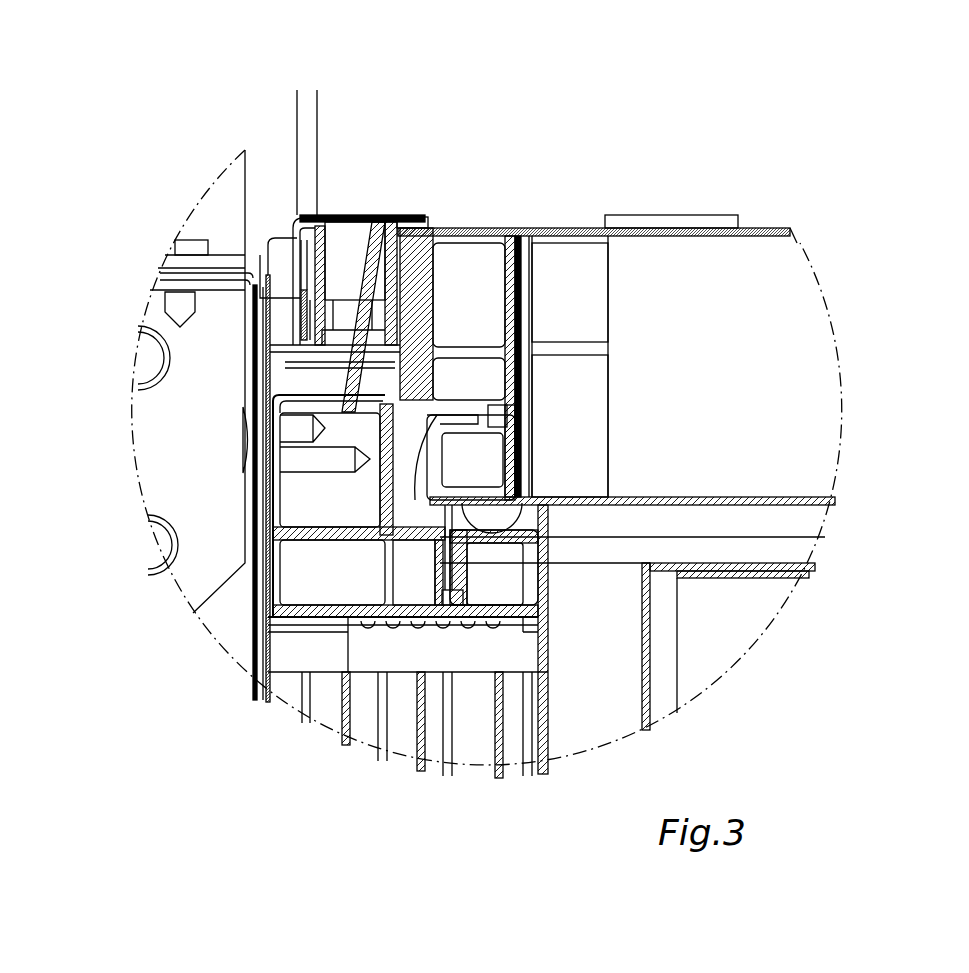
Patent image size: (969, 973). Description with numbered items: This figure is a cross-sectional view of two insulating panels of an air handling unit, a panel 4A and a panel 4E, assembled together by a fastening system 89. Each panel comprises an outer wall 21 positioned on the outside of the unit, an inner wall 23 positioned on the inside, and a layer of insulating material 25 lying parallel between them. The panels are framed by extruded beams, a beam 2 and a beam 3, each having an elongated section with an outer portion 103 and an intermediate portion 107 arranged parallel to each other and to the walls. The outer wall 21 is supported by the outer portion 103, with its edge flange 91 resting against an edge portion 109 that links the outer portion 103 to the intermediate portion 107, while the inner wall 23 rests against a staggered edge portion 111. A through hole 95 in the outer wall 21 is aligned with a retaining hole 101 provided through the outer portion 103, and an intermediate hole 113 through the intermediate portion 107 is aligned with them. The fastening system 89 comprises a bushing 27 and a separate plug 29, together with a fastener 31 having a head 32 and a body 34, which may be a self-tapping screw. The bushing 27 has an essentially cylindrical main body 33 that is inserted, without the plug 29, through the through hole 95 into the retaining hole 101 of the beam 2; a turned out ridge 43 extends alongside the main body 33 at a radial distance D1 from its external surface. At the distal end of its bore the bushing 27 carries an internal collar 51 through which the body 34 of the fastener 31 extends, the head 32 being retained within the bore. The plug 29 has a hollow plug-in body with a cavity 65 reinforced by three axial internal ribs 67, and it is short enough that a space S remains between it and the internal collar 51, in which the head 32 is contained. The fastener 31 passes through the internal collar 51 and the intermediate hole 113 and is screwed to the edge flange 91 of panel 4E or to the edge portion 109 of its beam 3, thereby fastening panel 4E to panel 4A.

The beam 2 is at (512, 273).
The beam 3 is at (540, 585).
The panel 4A is at (770, 315).
The panel 4E is at (545, 648).
The outer wall 21 is at (660, 226).
The inner wall 23 is at (700, 497).
The layer of insulating material 25 is at (712, 283).
The bushing 27 is at (404, 268).
The plug 29 is at (372, 228).
The fastener 31 is at (465, 393).
The head 32 is at (300, 328).
The main body 33 is at (300, 318).
The body 34 is at (300, 372).
The turned out ridge 43 is at (300, 240).
The internal collar 51 is at (402, 347).
The cavity 65 is at (360, 282).
The reinforcing axial internal ribs 67 is at (318, 240).
The fastening system 89 is at (276, 130).
The edge flange 91 is at (300, 248).
The through hole 95 is at (305, 216).
The retaining hole 101 is at (308, 290).
The outer portion 103 is at (414, 229).
The intermediate portion 107 is at (480, 352).
The edge portion 109 is at (228, 303).
The staggered edge portion 111 is at (437, 460).
The intermediate hole 113 is at (352, 440).
The space S is at (382, 309).
The radial distance D1 is at (268, 97).